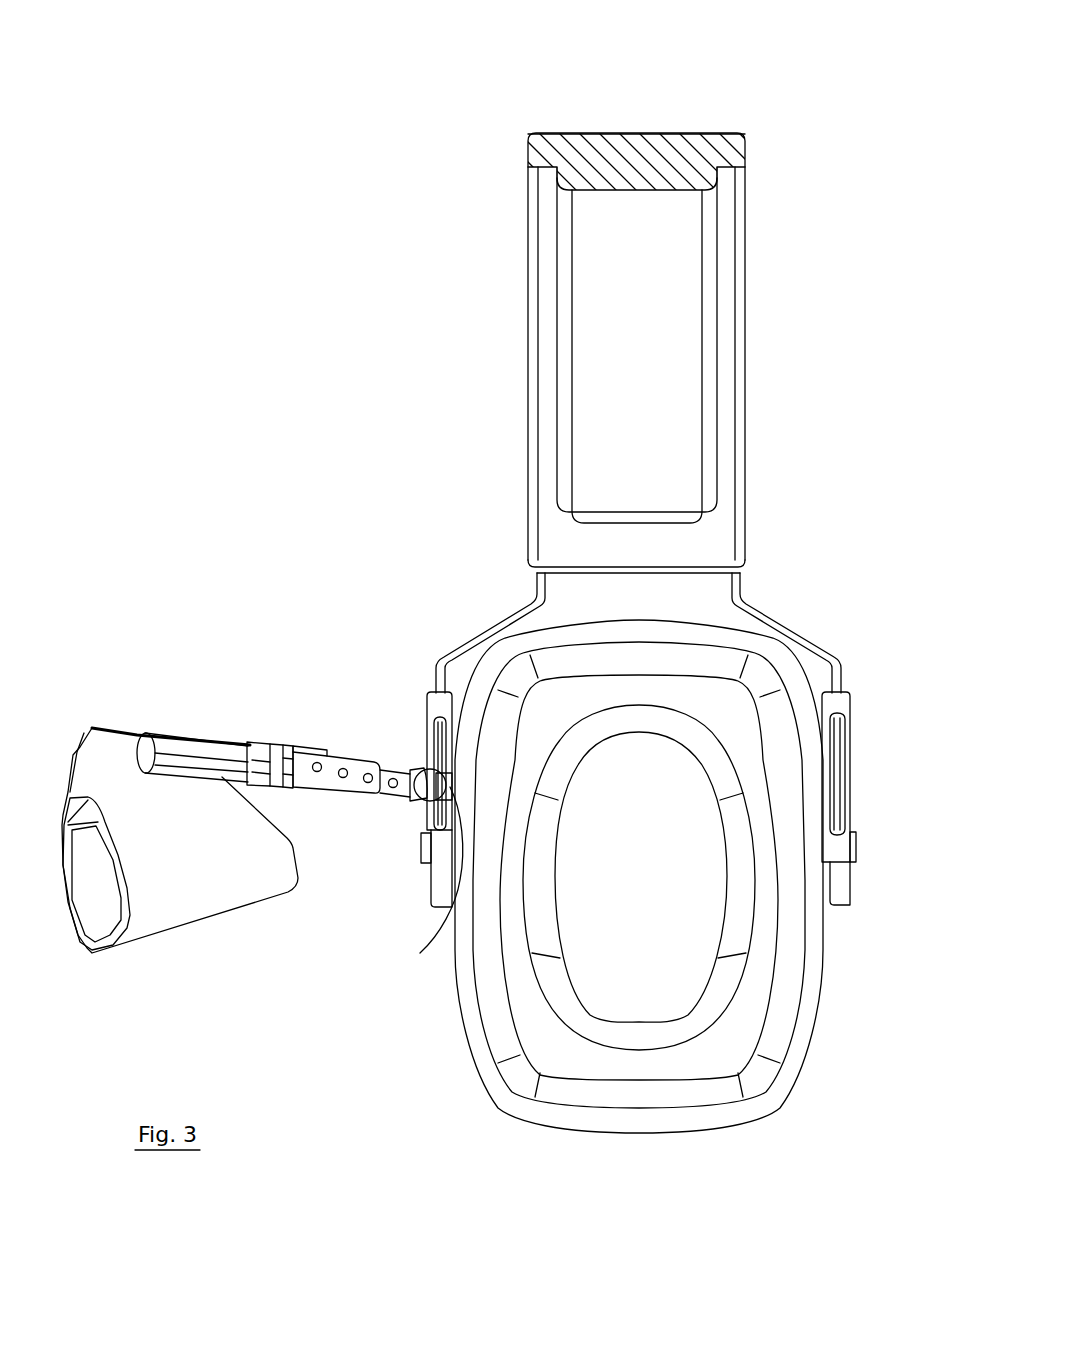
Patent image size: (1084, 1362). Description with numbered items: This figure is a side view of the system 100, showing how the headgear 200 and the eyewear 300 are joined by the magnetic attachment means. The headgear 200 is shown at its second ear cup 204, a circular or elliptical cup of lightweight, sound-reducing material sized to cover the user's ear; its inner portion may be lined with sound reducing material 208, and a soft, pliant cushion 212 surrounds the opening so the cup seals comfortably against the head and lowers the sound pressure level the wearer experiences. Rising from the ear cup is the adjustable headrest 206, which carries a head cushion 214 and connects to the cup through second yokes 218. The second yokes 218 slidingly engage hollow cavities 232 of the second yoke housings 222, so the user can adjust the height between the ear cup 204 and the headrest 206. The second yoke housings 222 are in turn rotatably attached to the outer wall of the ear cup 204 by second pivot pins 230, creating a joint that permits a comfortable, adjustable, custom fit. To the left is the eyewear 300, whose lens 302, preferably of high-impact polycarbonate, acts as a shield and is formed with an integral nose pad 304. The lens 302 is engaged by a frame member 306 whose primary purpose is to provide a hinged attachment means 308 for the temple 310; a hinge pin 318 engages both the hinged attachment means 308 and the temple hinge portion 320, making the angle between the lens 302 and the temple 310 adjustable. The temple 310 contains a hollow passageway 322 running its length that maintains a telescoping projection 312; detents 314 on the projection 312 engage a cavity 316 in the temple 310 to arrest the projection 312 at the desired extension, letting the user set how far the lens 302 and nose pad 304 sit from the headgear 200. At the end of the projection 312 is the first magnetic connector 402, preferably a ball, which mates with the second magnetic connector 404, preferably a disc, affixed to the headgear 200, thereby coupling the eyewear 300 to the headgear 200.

The system 100 is at (305, 72).
The headgear 200 is at (810, 602).
The second ear cup 204 is at (790, 1096).
The adjustable headrest 206 is at (728, 329).
The sound reducing material 208 is at (655, 960).
The cushion 212 is at (745, 1012).
The head cushion 214 is at (682, 394).
The second yokes 218 is at (488, 640).
The second yoke housings 222 is at (436, 702).
The second pivot pins 230 is at (435, 852).
The hollow cavities 232 is at (443, 746).
The eyewear 300 is at (211, 690).
The lens 302 is at (187, 900).
The nose pad 304 is at (135, 927).
The frame member 306 is at (215, 732).
The hinged attachment means 308 is at (264, 745).
The temple 310 is at (335, 748).
The projection 312 is at (377, 800).
The detents 314 is at (390, 793).
The cavity 316 is at (337, 797).
The hinge pin 318 is at (283, 748).
The temple hinge portion 320 is at (276, 775).
The hollow passageway 322 is at (296, 746).
The first magnetic connector 402 is at (420, 807).
The second magnetic connector 404 is at (453, 920).